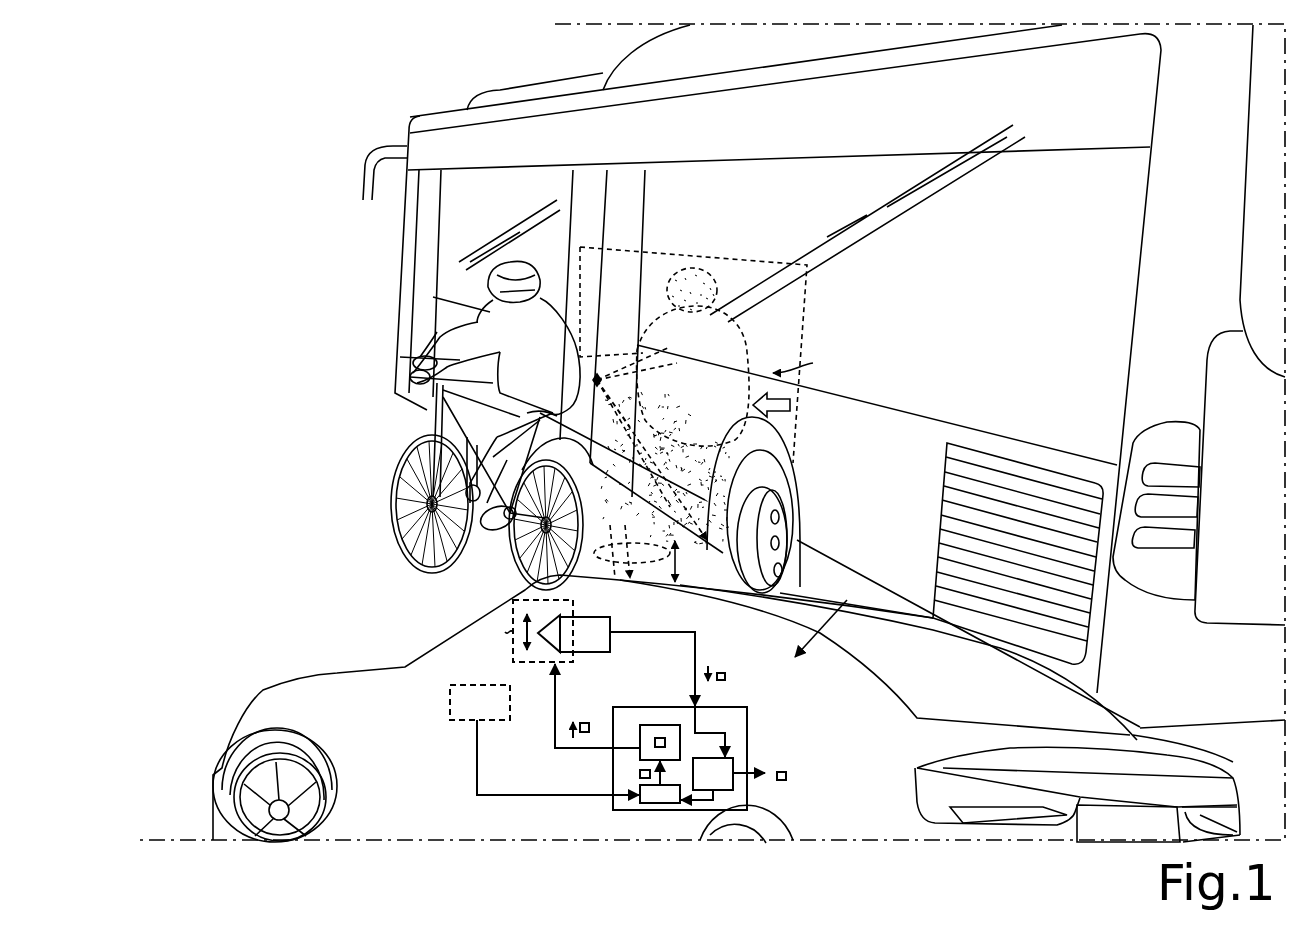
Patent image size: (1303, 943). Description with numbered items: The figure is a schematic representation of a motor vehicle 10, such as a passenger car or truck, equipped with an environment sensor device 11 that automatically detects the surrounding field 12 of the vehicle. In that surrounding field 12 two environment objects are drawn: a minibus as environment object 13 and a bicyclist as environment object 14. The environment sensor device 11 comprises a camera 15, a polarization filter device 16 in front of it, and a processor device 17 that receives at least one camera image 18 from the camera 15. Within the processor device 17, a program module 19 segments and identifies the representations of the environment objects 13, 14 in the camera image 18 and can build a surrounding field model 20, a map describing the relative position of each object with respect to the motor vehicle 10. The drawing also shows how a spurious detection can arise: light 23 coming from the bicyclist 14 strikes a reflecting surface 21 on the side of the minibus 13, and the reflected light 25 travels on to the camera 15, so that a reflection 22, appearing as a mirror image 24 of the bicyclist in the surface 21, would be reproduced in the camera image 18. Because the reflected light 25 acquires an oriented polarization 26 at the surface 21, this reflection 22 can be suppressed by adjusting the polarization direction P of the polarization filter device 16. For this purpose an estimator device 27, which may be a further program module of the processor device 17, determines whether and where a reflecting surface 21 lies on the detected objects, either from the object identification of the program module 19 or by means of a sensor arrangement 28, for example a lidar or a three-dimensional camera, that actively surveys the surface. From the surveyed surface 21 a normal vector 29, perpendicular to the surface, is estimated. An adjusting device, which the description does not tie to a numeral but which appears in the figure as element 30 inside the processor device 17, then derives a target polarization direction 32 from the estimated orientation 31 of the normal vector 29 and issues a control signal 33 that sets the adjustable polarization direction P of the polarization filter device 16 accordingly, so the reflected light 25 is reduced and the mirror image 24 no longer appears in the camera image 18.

The motor vehicle 10 is at (353, 673).
The environment sensor device 11 is at (833, 613).
The surrounding field 12 is at (780, 376).
The environment object 13 is at (403, 262).
The environment object 14 is at (423, 353).
The camera 15 is at (611, 627).
The polarization filter device 16 is at (512, 652).
The processor device 17 is at (747, 723).
The camera image 18 is at (727, 677).
The program module 19 is at (747, 765).
The surrounding field model 20 is at (783, 780).
The reflecting surface 21 is at (807, 303).
The reflection 22 is at (811, 358).
The light 23 is at (618, 343).
The mirror image 24 is at (740, 337).
The reflected light 25 is at (633, 548).
The polarization 26 is at (678, 567).
The estimator device 27 is at (660, 810).
The sensor arrangement 28 is at (450, 693).
The normal vector 29 is at (787, 417).
The signal line 30 is at (660, 725).
The estimated orientation 31 is at (643, 773).
The target polarization direction 32 is at (643, 743).
The control signal 33 is at (583, 722).